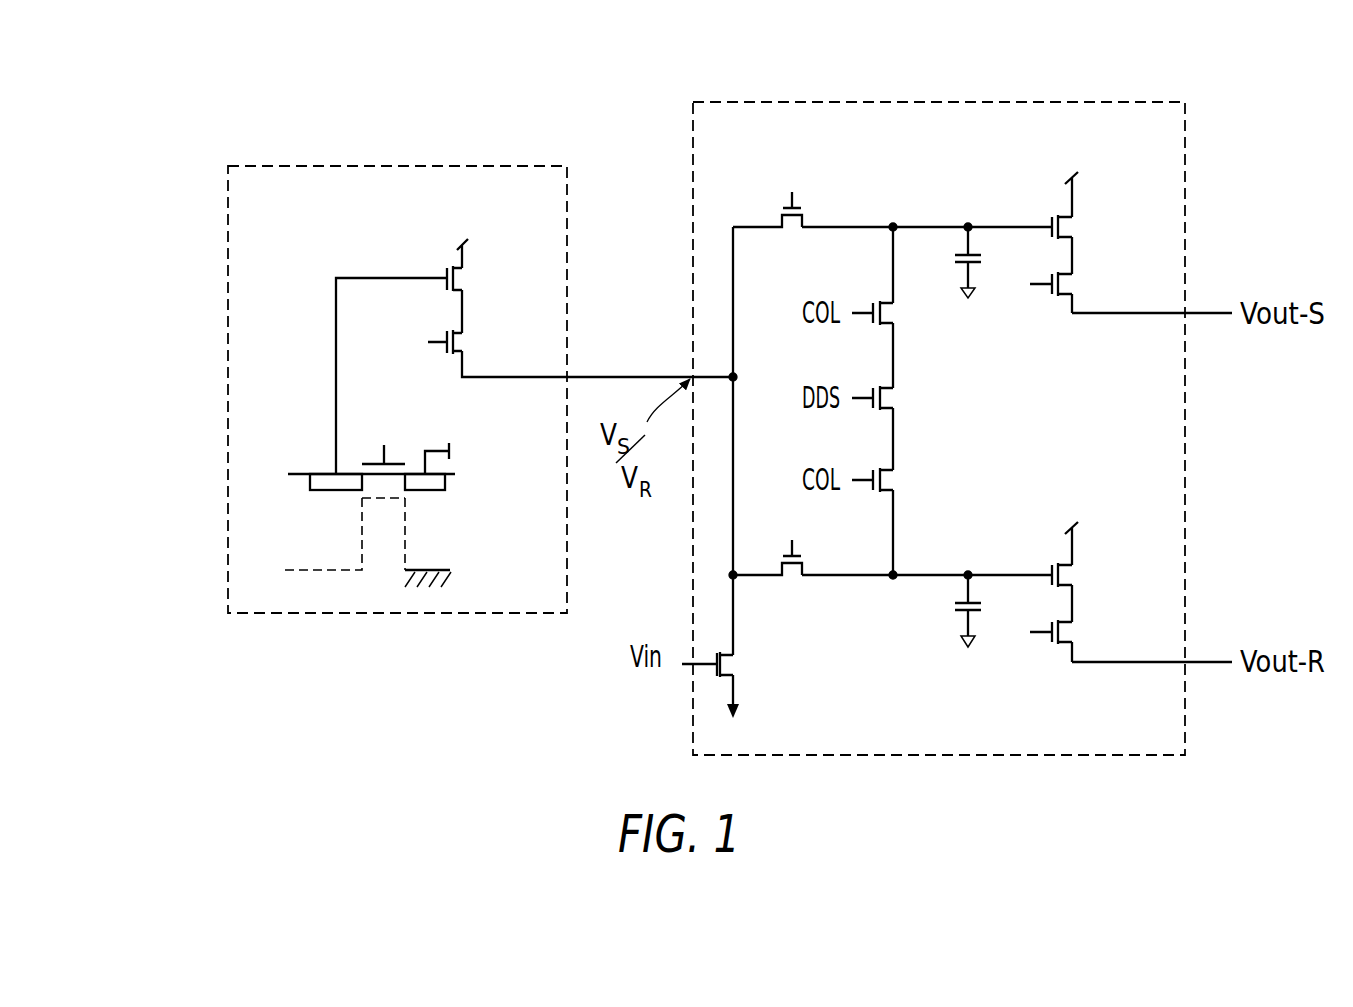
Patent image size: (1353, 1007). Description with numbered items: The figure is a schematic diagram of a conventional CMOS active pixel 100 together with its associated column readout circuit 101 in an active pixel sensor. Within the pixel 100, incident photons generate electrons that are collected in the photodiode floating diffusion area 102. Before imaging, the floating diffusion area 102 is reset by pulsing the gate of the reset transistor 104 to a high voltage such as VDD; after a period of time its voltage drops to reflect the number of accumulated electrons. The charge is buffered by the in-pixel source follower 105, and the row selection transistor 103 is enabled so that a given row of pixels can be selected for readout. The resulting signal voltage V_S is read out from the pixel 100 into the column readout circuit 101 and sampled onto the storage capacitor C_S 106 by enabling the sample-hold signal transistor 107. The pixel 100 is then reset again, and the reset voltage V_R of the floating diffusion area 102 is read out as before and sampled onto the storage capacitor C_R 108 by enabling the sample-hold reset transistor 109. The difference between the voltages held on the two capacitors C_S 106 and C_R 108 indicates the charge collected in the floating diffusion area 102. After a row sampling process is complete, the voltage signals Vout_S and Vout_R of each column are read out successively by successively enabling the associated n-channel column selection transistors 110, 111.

The pixel 100 is at (213, 249).
The column readout circuit 101 is at (1027, 80).
The floating diffusion area 102 is at (327, 483).
The row selection transistor 103 is at (475, 343).
The reset transistor 104 is at (400, 452).
The source follower 105 is at (475, 278).
The storage capacitor C_S 106 is at (959, 272).
The sample-hold signal (SHS) transistor 107 is at (813, 219).
The storage capacitor C_R 108 is at (950, 621).
The sample-hold reset (SHR) transistor 109 is at (793, 585).
The column selection transistor 110 is at (1079, 280).
The column selection transistor 111 is at (1080, 631).